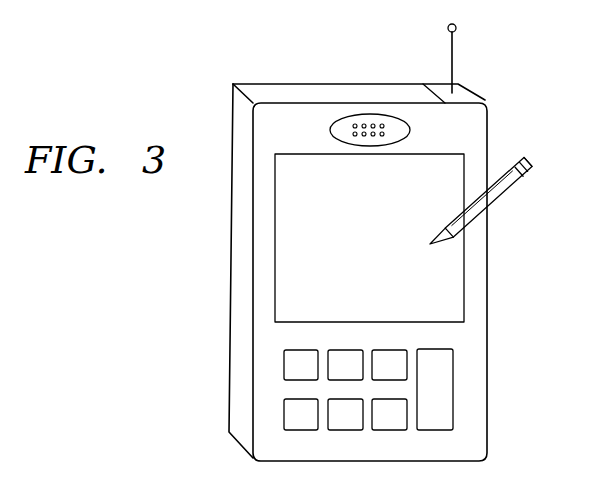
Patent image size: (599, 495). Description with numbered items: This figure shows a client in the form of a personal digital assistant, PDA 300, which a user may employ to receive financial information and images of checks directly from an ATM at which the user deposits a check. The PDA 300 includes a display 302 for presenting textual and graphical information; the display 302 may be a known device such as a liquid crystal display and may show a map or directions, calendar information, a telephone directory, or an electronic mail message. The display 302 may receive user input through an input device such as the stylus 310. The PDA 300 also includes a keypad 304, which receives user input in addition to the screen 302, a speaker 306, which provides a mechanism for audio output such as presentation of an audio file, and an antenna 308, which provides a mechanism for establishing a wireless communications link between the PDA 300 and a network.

The PDA 300 is at (490, 127).
The display 302 is at (389, 250).
The keypad 304 is at (496, 343).
The speaker 306 is at (410, 130).
The antenna 308 is at (453, 58).
The stylus 310 is at (510, 192).